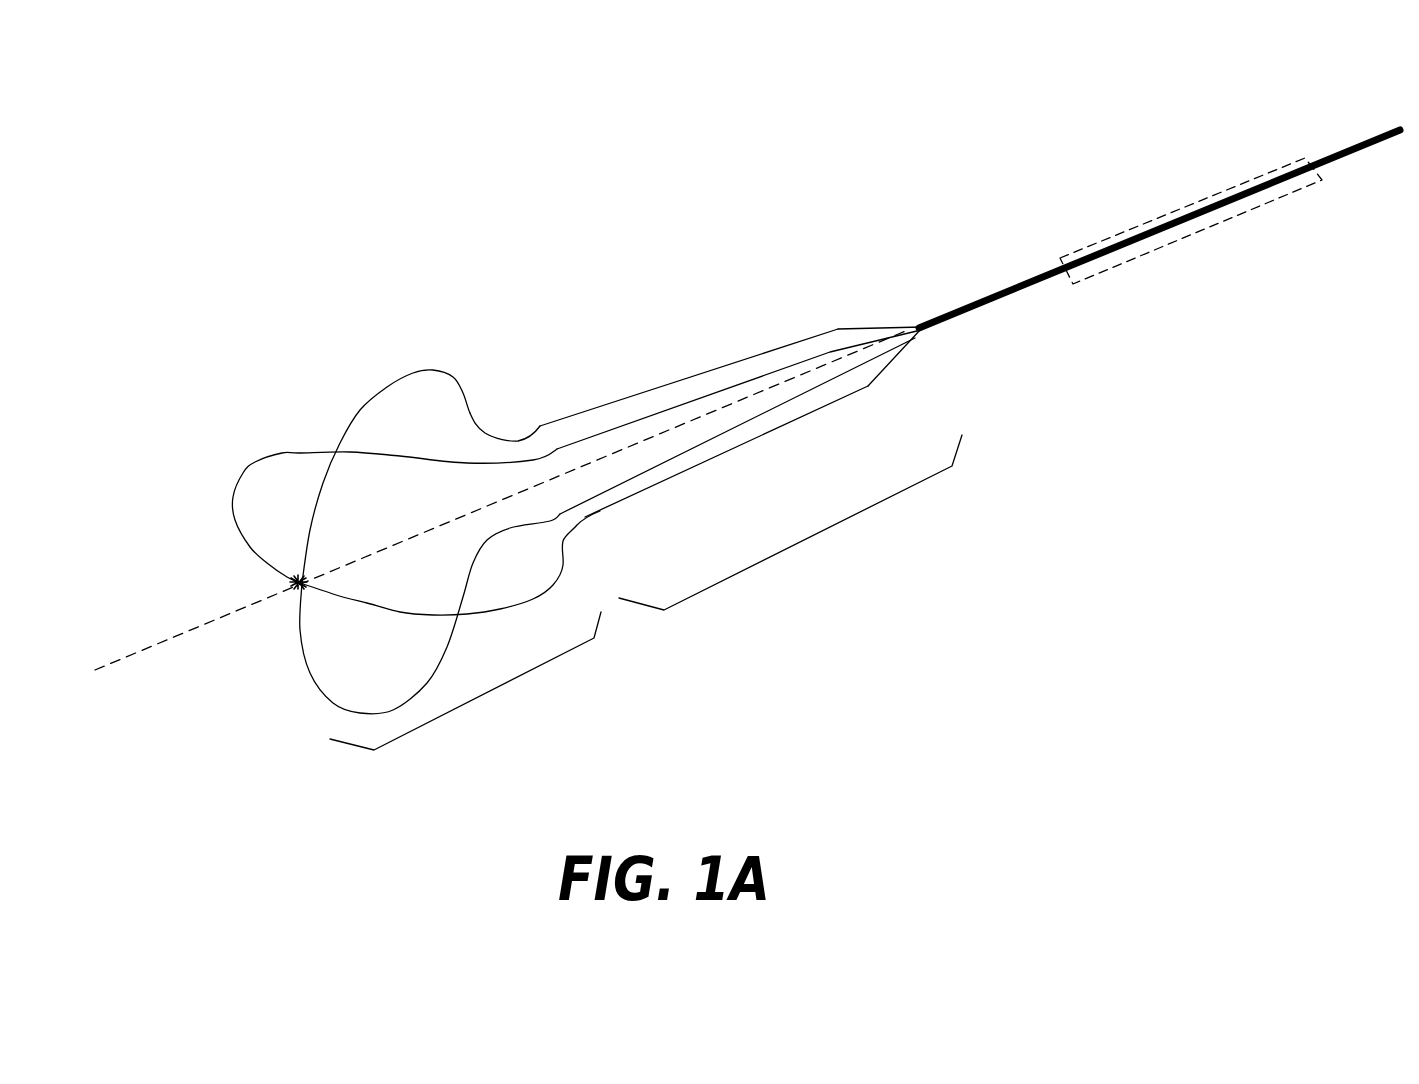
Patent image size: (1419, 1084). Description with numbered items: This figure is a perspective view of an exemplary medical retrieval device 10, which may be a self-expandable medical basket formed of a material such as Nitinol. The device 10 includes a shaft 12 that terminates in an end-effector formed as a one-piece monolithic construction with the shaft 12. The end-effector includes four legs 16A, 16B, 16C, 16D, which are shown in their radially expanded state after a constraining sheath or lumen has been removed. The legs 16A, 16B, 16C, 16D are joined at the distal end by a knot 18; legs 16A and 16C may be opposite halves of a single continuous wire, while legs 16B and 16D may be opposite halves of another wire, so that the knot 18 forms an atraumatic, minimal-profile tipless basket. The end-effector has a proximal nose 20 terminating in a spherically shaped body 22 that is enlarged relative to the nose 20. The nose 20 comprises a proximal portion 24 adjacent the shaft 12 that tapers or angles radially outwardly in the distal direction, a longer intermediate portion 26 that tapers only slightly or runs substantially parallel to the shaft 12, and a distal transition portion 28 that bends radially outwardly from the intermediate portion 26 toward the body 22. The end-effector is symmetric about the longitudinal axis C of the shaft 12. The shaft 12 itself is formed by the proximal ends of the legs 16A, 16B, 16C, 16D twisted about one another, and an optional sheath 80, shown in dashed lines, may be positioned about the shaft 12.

The medical retrieval device 10 is at (667, 185).
The shaft 12 is at (1030, 283).
The leg 16A is at (282, 455).
The leg 16B is at (428, 370).
The leg 16C is at (390, 610).
The leg 16D is at (313, 685).
The knot 18 is at (292, 583).
The proximal nose 20 is at (803, 540).
The body 22 is at (474, 700).
The proximal portion 24 is at (865, 328).
The intermediate portion 26 is at (705, 375).
The distal transition portion 28 is at (500, 413).
The sheath 80 is at (1162, 217).
The longitudinal axis C is at (124, 660).